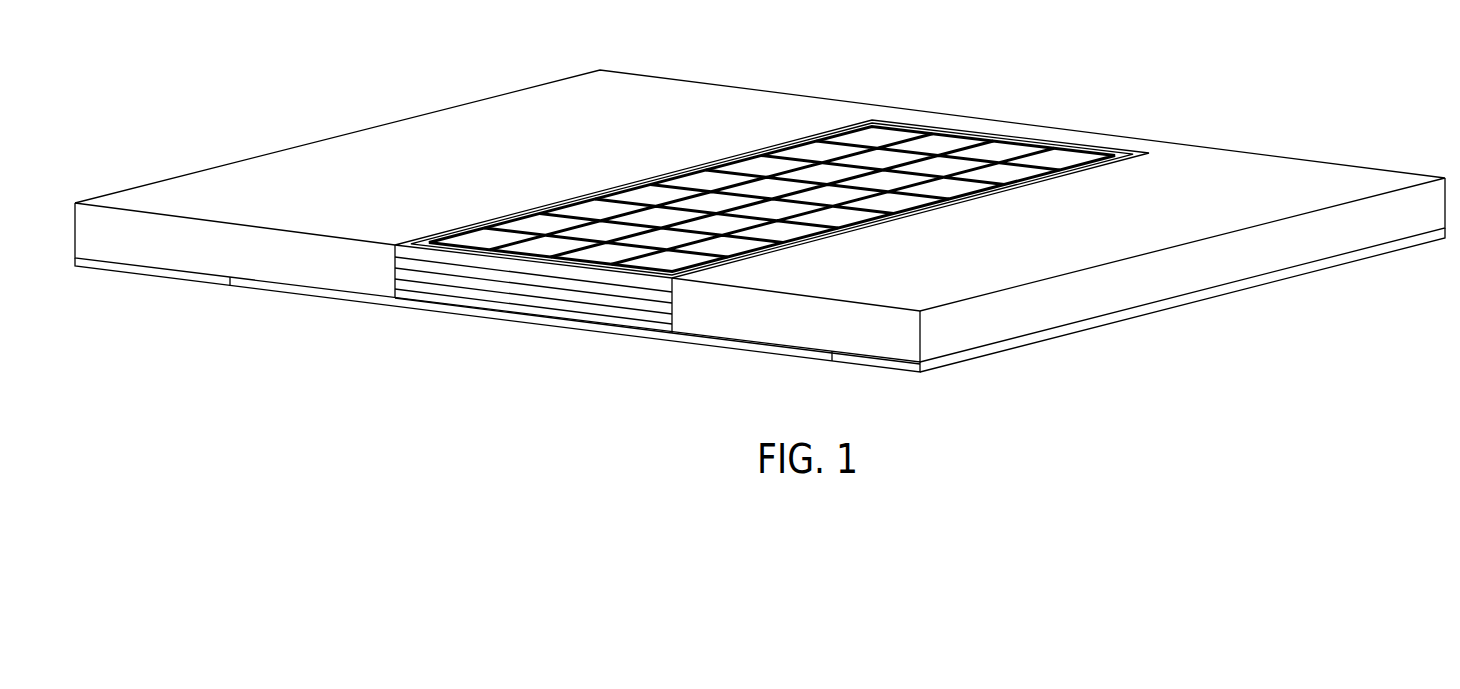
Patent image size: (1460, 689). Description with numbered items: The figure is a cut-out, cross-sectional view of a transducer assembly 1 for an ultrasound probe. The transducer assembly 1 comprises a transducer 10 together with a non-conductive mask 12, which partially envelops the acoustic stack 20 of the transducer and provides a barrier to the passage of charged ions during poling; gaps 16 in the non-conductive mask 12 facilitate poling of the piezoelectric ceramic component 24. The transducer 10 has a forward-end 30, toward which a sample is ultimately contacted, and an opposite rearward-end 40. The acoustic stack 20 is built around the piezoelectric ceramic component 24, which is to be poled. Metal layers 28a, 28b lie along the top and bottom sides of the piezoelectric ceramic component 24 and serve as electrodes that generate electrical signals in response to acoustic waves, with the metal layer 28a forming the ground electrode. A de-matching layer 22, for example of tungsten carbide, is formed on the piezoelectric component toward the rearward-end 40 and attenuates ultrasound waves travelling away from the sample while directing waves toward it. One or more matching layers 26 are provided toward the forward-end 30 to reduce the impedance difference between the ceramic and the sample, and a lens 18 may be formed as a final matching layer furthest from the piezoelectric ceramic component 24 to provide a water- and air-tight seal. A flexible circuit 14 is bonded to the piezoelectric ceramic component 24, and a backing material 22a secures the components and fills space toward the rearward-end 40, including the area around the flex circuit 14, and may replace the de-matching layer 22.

The transducer assembly 1 is at (392, 67).
The transducer 10 is at (498, 329).
The non-conductive mask 12 is at (669, 171).
The flexible circuit 14 is at (708, 346).
The gaps 16 is at (800, 153).
The lens 18 is at (436, 252).
The acoustic stack 20 is at (681, 307).
The de-matching layer 22 is at (410, 301).
The backing material 22a is at (170, 278).
The piezoelectric ceramic component 24 is at (394, 287).
The matching layers 26 is at (455, 272).
The metal layer 28a is at (403, 256).
The metal layer 28b is at (393, 295).
The forward-end 30 is at (1288, 113).
The rearward-end 40 is at (1228, 318).